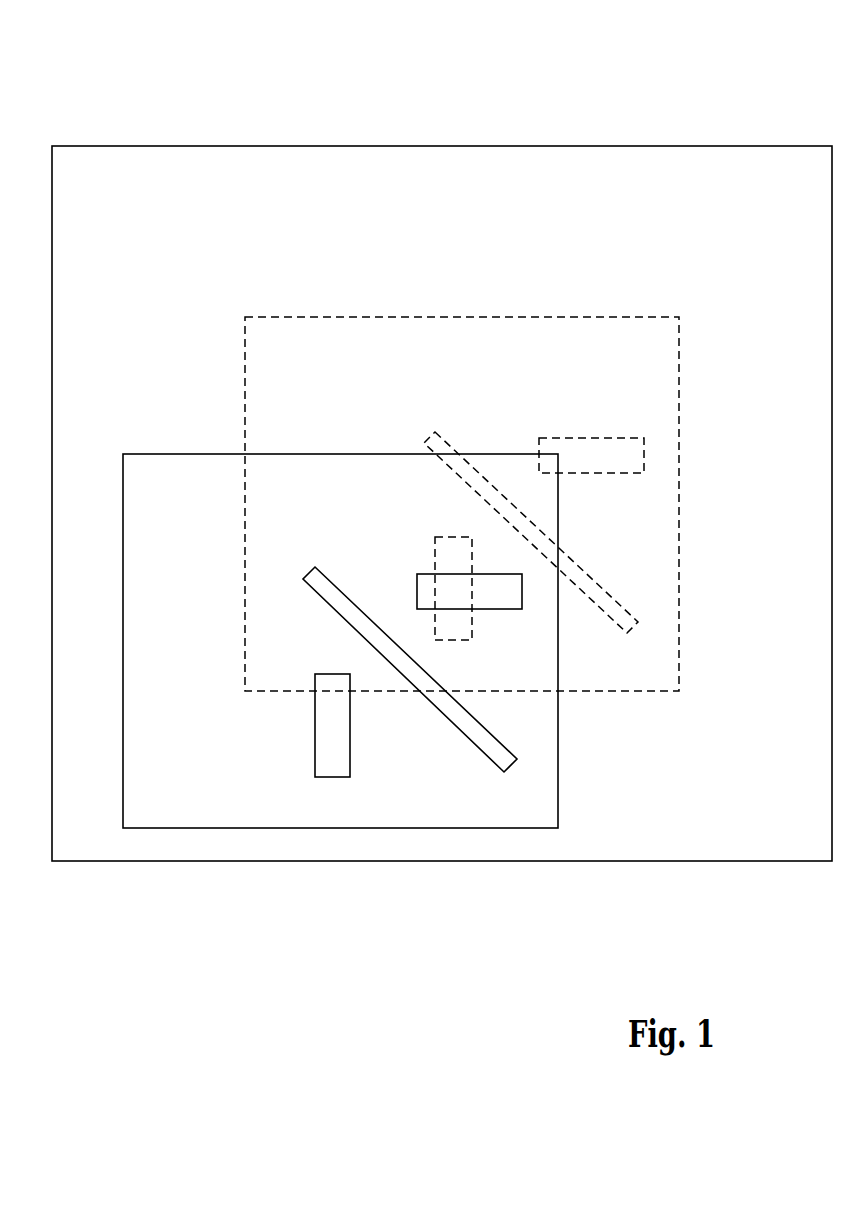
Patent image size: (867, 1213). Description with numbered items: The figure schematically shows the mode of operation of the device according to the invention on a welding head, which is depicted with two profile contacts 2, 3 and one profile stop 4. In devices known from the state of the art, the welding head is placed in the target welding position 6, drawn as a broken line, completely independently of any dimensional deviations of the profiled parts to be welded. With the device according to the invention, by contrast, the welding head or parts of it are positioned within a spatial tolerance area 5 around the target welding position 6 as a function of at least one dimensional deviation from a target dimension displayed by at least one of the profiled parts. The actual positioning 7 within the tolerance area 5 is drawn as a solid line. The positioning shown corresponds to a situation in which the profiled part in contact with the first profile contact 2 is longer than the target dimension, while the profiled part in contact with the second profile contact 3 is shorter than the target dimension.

The first profile contact 2 is at (613, 460).
The second profile contact 3 is at (457, 561).
The profile stop 4 is at (607, 603).
The spatial tolerance area 5 is at (573, 193).
The target welding position 6 is at (240, 282).
The actual positioning 7 is at (146, 429).